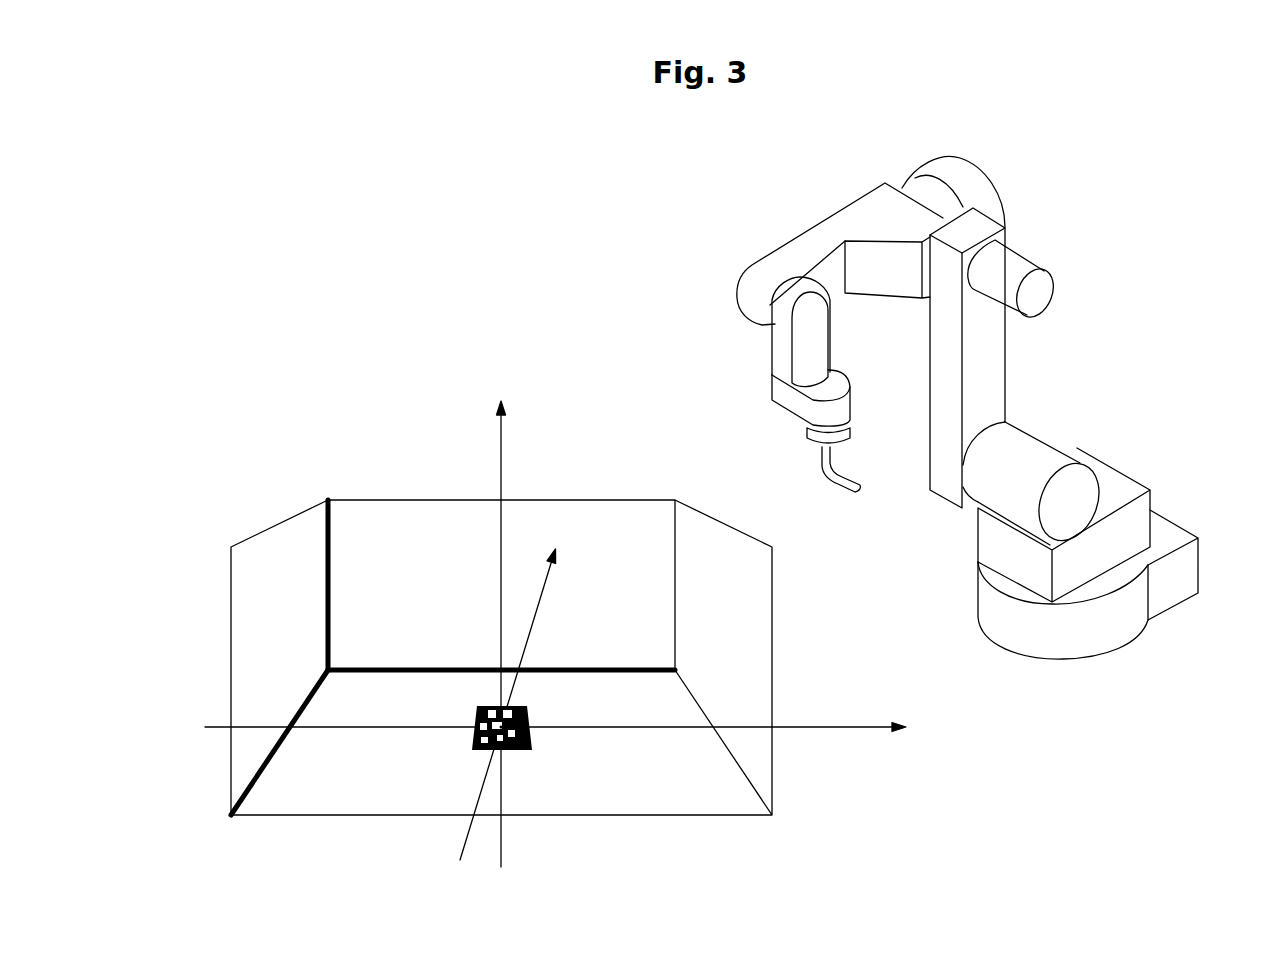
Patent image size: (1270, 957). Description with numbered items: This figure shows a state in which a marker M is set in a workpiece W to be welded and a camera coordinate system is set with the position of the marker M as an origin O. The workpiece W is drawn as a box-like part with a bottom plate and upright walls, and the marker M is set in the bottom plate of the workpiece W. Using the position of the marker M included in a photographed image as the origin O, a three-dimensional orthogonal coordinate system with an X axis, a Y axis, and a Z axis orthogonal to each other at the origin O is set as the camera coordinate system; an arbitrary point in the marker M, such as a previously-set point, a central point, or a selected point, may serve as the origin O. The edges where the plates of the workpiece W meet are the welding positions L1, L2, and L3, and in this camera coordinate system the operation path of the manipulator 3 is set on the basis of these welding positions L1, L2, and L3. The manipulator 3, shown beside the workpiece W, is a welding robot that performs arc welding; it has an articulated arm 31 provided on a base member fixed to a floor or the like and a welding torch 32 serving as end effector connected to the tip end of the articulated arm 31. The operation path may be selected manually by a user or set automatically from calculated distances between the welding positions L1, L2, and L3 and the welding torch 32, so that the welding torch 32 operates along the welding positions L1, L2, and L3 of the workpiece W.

The manipulator 3 is at (982, 172).
The articulated arm 31 is at (780, 250).
The welding torch 32 is at (855, 407).
The workpiece W is at (501, 641).
The welding position L1 is at (279, 742).
The welding position L2 is at (501, 654).
The welding position L3 is at (312, 585).
The marker M is at (528, 718).
The origin O is at (503, 723).
The X axis X is at (565, 728).
The Y axis Y is at (516, 695).
The Z axis Z is at (502, 620).